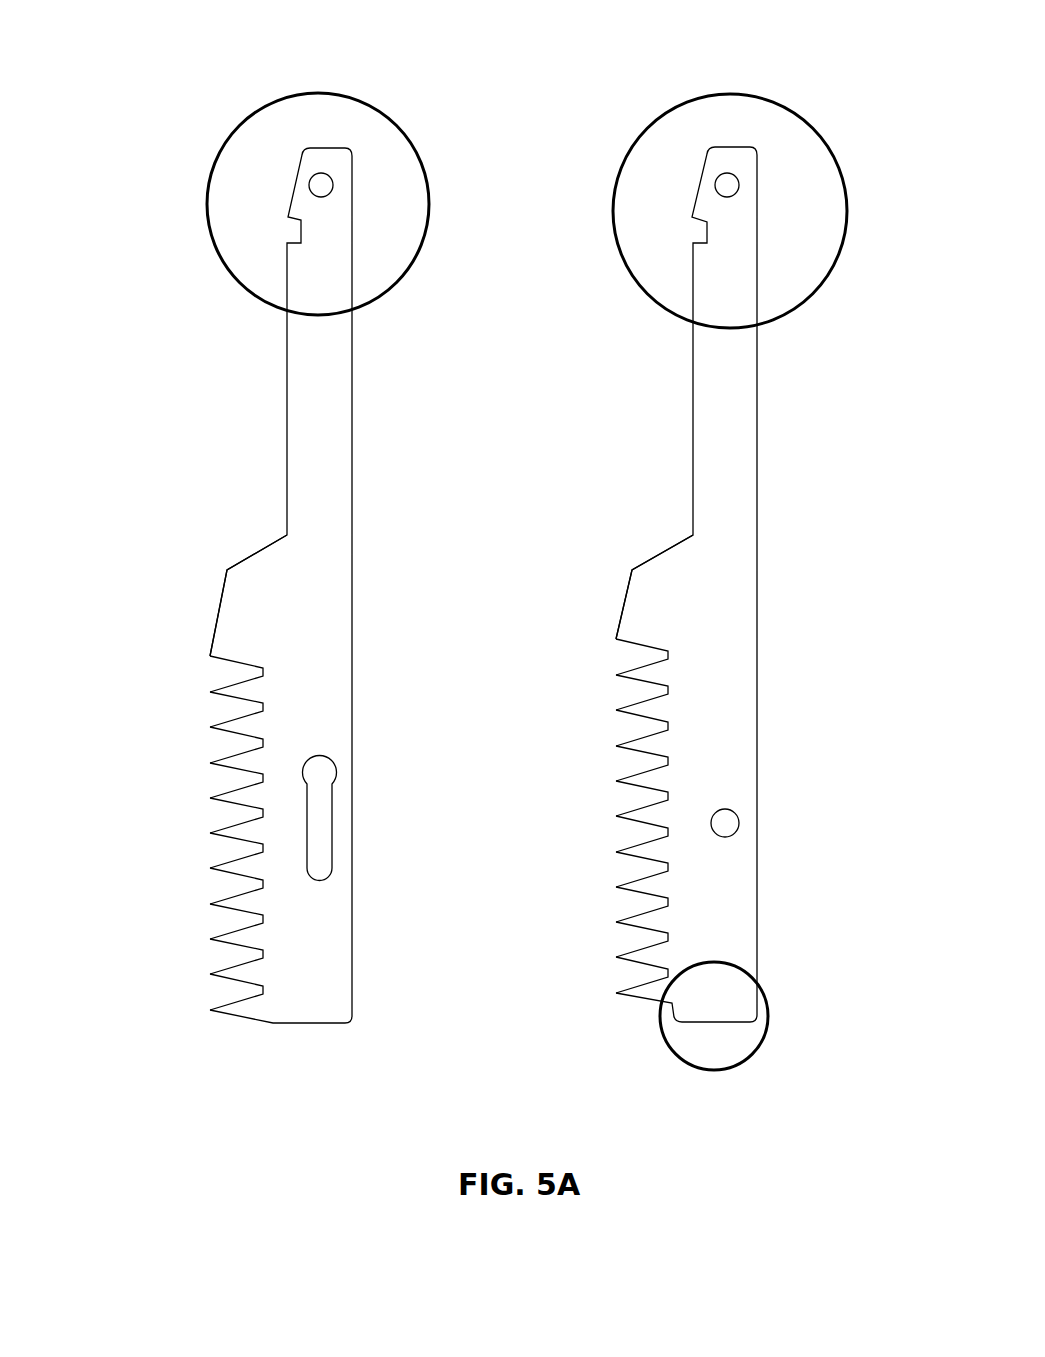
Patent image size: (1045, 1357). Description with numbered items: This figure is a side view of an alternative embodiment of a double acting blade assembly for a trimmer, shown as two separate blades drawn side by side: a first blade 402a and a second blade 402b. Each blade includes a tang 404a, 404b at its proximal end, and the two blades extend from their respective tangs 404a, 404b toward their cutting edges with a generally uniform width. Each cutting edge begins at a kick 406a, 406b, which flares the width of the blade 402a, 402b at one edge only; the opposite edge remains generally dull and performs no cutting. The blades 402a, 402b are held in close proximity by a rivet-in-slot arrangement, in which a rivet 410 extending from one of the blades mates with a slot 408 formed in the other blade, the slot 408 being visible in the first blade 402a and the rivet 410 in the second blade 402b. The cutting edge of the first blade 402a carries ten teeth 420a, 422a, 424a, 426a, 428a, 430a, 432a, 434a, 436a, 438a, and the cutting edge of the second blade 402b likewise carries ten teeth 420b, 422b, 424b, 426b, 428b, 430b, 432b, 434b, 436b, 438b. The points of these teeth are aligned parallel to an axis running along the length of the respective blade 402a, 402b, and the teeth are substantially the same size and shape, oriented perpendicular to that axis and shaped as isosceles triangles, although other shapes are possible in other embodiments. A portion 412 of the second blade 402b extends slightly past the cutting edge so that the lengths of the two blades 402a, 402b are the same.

The first blade 402a is at (178, 417).
The second blade 402b is at (608, 443).
The tang 404a is at (393, 120).
The tang 404b is at (807, 115).
The kick 406a is at (237, 607).
The kick 406b is at (648, 597).
The slot 408 is at (313, 825).
The rivet 410 is at (721, 820).
The portion 412 is at (763, 1043).
The tooth 420a is at (235, 692).
The tooth 422a is at (235, 727).
The tooth 424a is at (235, 763).
The tooth 426a is at (235, 798).
The tooth 428a is at (235, 833).
The tooth 430a is at (235, 868).
The tooth 432a is at (235, 904).
The tooth 434a is at (235, 939).
The tooth 436a is at (235, 974).
The tooth 438a is at (235, 1010).
The tooth 420b is at (640, 674).
The tooth 422b is at (640, 710).
The tooth 424b is at (640, 745).
The tooth 426b is at (640, 780).
The tooth 428b is at (640, 816).
The tooth 430b is at (640, 851).
The tooth 432b is at (640, 886).
The tooth 434b is at (640, 921).
The tooth 436b is at (640, 957).
The tooth 438b is at (640, 992).